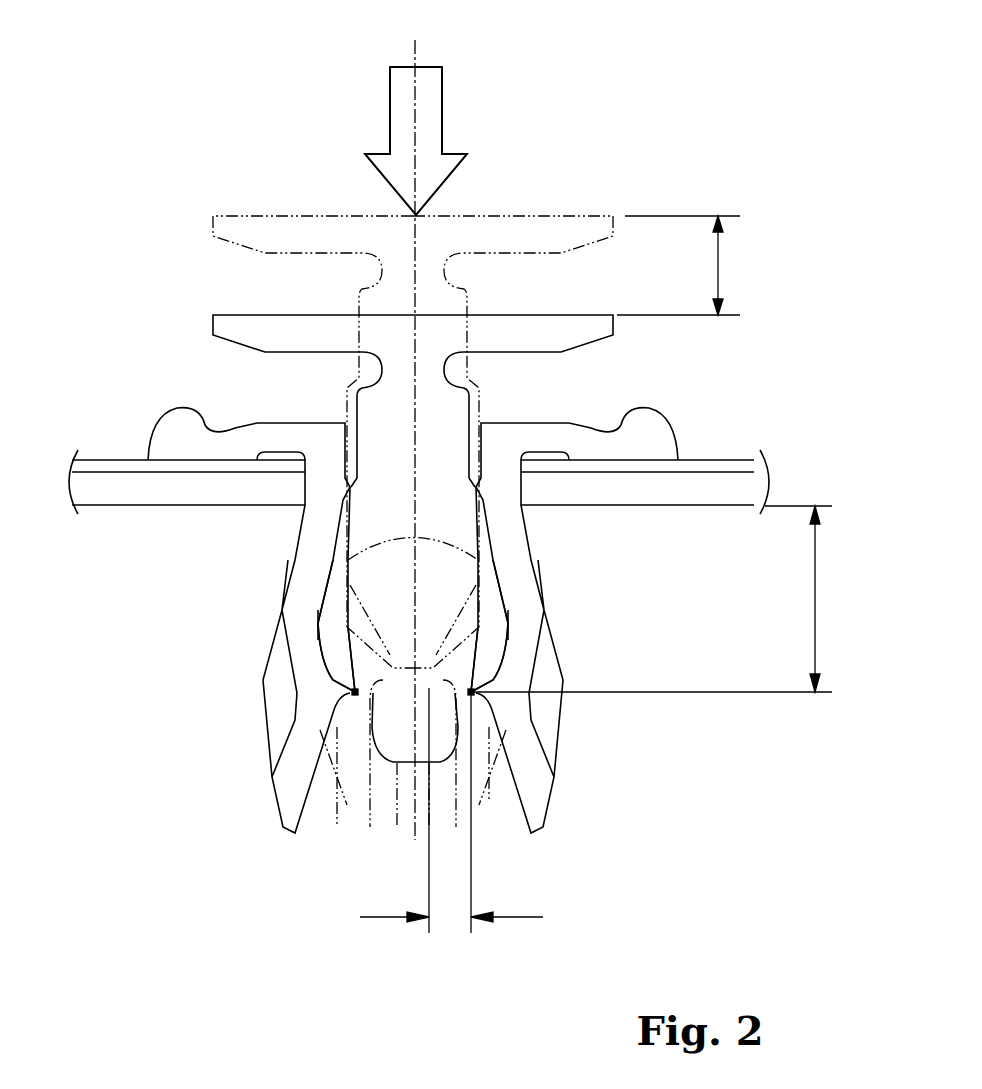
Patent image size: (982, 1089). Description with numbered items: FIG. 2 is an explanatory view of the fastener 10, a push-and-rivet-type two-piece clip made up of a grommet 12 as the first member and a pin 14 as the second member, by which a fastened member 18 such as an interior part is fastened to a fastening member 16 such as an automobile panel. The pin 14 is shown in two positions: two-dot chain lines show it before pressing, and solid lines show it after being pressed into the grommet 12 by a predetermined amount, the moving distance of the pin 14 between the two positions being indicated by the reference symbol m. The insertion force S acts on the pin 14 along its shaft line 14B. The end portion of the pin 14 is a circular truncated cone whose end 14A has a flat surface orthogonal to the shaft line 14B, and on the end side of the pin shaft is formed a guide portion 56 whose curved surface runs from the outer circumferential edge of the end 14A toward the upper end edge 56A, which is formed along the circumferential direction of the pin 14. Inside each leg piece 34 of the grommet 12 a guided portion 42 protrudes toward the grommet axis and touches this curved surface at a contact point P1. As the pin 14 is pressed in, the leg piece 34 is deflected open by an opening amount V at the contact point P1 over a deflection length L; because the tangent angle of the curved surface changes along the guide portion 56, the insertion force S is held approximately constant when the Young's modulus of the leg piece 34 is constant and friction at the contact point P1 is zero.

The fastener 10 is at (747, 126).
The grommet 12 is at (477, 529).
The pin 14 is at (437, 505).
The end 14A is at (398, 827).
The shaft line 14B is at (360, 536).
The fastening member 16 is at (693, 508).
The fastened member 18 is at (703, 460).
The leg piece 34 is at (347, 805).
The guided portion 42 is at (470, 695).
The guide portion 56 is at (348, 658).
The upper end edge 56A is at (347, 636).
The contact point P1 is at (352, 692).
The insertion force S is at (444, 107).
The moving distance m is at (720, 262).
The deflection length L is at (822, 580).
The opening volume V is at (447, 920).